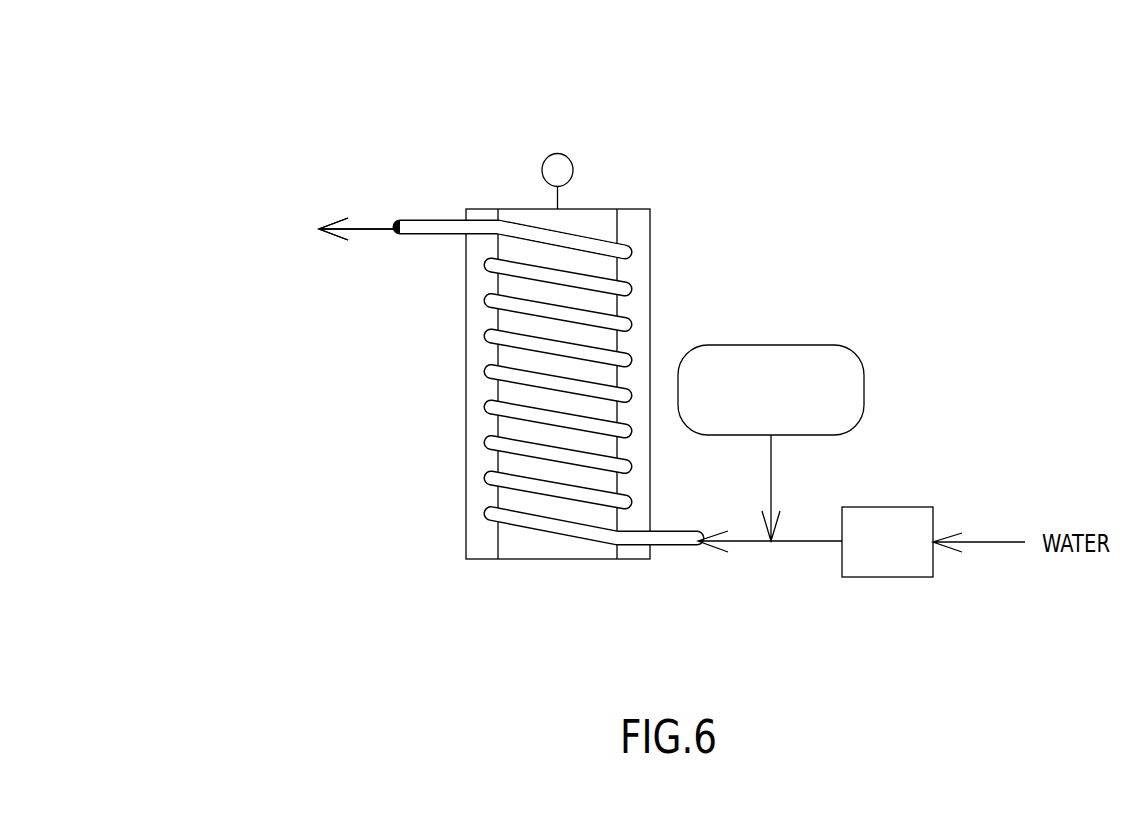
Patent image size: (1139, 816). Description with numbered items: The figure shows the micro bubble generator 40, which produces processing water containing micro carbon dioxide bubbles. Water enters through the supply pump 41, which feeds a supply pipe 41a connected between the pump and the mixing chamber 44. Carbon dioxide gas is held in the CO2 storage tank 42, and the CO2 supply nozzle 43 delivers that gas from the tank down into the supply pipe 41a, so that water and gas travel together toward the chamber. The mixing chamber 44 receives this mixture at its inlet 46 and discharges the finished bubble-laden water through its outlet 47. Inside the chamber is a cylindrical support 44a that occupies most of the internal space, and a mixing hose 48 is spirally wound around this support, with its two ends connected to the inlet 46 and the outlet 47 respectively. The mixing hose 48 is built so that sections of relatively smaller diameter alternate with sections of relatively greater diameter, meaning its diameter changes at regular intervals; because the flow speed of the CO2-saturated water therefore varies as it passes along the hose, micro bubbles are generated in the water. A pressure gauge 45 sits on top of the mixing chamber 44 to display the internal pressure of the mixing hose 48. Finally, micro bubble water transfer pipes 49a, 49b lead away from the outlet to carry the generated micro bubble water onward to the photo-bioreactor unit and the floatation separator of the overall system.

The micro bubble generator 40 is at (489, 141).
The supply pump 41 is at (908, 578).
The supply pipe 41a is at (804, 543).
The CO2 storage tank 42 is at (850, 352).
The CO2 supply nozzle 43 is at (772, 472).
The mixing chamber 44 is at (650, 264).
The cylindrical support 44a is at (497, 537).
The pressure gauge 45 is at (563, 156).
The inlet 46 is at (672, 548).
The outlet 47 is at (435, 217).
The mixing hose 48 is at (496, 367).
The micro bubble water transfer pipe 49a is at (372, 240).
The micro bubble water transfer pipe 49b is at (359, 229).